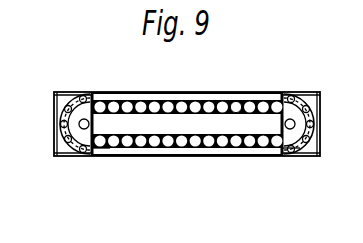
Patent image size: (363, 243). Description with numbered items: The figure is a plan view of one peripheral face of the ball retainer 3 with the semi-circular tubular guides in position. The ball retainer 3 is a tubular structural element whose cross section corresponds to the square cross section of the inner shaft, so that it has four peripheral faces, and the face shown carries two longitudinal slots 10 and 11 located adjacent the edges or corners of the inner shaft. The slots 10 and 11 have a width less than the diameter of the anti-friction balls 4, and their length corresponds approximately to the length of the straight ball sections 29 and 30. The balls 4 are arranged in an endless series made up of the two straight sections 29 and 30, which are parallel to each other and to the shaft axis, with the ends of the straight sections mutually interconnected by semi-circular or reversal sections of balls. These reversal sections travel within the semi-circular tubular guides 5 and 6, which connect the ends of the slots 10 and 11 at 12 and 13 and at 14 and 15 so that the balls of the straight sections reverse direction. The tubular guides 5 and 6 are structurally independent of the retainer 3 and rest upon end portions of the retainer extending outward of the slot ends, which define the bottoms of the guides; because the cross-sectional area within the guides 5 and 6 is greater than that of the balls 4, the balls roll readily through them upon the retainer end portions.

The ball retainer 3 is at (149, 156).
The anti-friction balls 4 is at (237, 104).
The semi-circular tubular guide 5 is at (317, 113).
The semi-circular tubular guide 6 is at (60, 129).
The longitudinal slot 10 is at (197, 94).
The longitudinal slot 11 is at (219, 148).
The slot end connection 12 is at (283, 142).
The slot end connection 13 is at (283, 103).
The slot end connection 14 is at (96, 147).
The slot end connection 15 is at (94, 97).
The straight section of balls 29 is at (170, 101).
The straight section of balls 30 is at (184, 146).